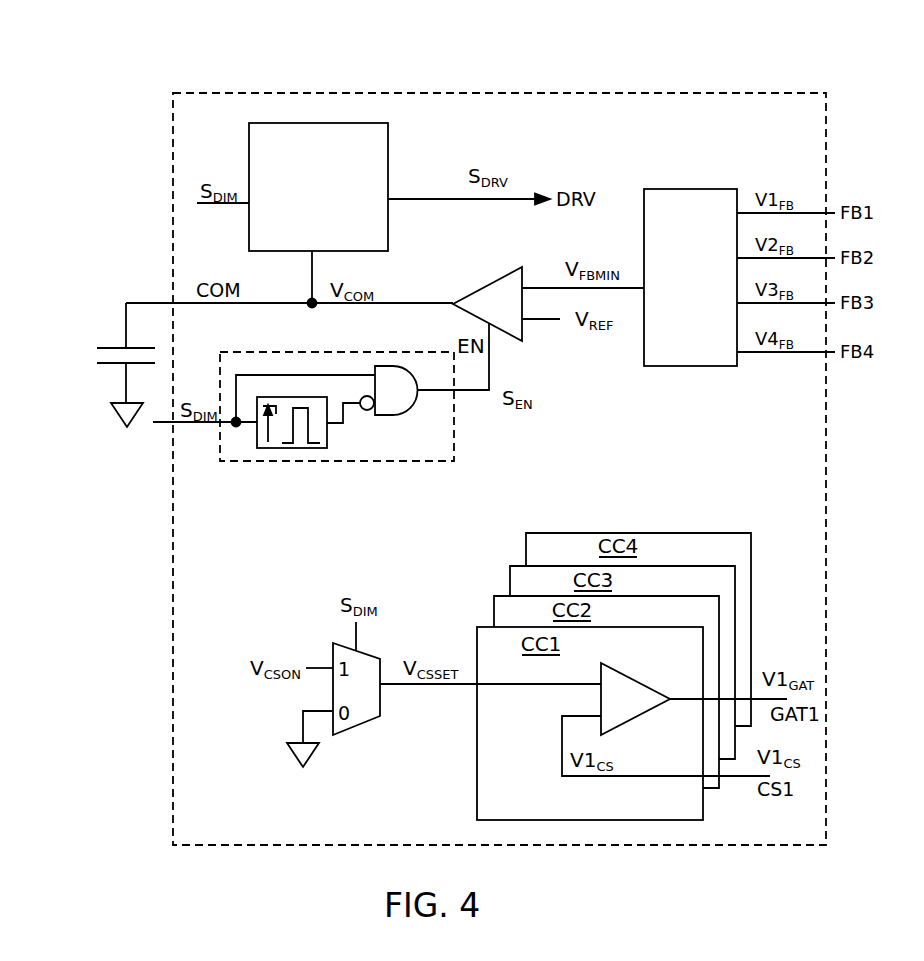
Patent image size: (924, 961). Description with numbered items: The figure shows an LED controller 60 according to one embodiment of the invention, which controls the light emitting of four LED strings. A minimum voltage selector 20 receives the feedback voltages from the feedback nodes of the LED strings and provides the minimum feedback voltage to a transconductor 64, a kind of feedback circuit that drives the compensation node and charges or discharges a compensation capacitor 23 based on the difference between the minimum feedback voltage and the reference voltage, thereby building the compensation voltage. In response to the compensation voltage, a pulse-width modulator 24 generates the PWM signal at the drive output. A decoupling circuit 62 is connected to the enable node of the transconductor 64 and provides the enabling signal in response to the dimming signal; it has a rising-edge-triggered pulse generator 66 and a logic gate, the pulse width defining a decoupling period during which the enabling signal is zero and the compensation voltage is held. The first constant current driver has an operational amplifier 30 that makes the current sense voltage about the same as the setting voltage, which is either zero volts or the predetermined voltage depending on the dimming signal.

The LED controller 60 is at (349, 92).
The pulse-width modulator 24 is at (307, 232).
The transconductor 64 is at (492, 282).
The minimum voltage selector 20 is at (679, 331).
The compensation capacitor 23 is at (95, 355).
The decoupling circuit 62 is at (366, 428).
The rising-edge-triggered pulse generator 66 is at (272, 450).
The operational amplifier 30 is at (632, 720).